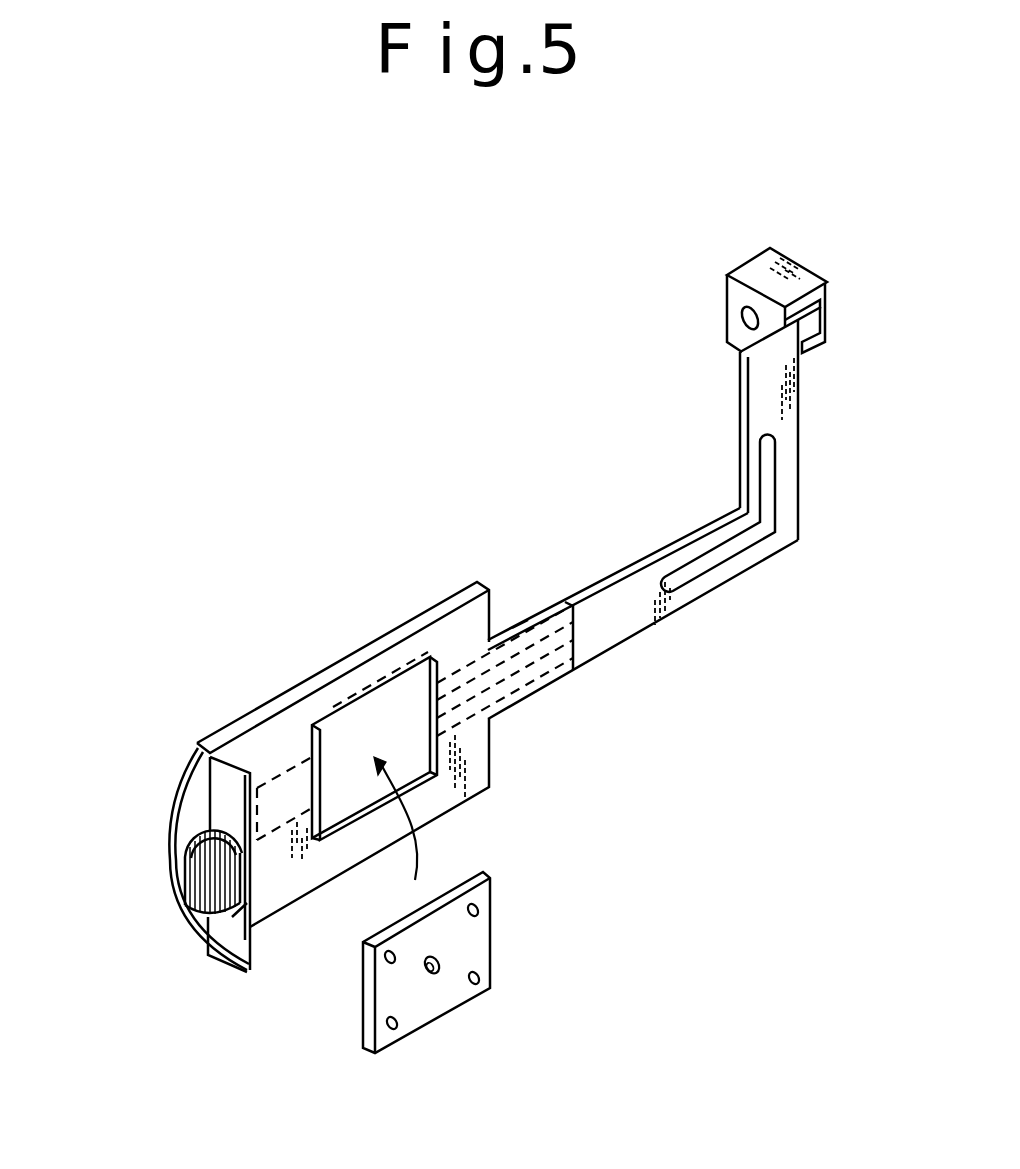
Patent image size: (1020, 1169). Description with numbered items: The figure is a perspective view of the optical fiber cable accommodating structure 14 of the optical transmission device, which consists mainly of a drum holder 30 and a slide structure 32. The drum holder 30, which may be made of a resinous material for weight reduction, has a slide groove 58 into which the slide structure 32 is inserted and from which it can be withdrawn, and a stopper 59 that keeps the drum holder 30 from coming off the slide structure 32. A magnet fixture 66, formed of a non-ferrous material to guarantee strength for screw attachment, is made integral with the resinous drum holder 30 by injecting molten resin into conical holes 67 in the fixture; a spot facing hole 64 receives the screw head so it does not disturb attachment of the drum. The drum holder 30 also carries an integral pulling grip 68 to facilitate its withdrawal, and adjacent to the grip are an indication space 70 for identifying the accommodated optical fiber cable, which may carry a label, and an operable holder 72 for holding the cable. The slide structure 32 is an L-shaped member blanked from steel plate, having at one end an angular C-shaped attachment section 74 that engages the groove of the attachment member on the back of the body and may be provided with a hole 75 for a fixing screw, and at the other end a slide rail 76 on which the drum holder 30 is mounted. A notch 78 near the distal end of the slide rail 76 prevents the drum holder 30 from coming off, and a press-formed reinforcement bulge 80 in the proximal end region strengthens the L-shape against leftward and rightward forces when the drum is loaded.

The optical fiber cable accommodating structure 14 is at (541, 462).
The drum holder 30 is at (345, 655).
The slide structure 32 is at (638, 560).
The slide groove 58 is at (462, 660).
The stopper 59 is at (520, 622).
The spot facing hole 64 is at (435, 968).
The magnet fixture 66 is at (492, 945).
The conical holes 67 is at (480, 900).
The pulling grip 68 is at (186, 803).
The indication space 70 is at (200, 752).
The operable holder 72 is at (235, 905).
The angular C-shaped attachment section 74 is at (758, 258).
The hole 75 is at (745, 312).
The slide rail 76 is at (625, 623).
The notch 78 is at (533, 657).
The reinforcement bulge 80 is at (770, 470).